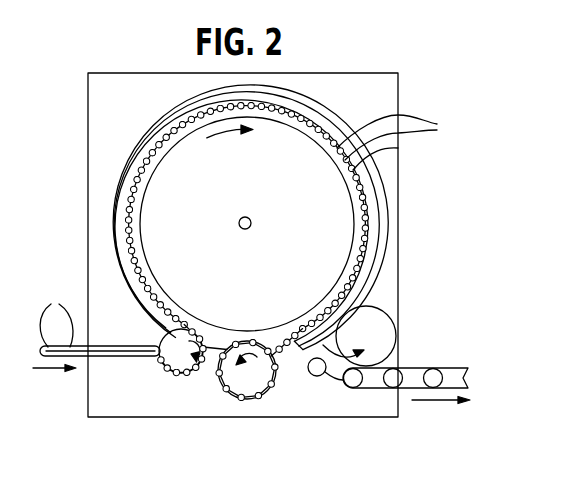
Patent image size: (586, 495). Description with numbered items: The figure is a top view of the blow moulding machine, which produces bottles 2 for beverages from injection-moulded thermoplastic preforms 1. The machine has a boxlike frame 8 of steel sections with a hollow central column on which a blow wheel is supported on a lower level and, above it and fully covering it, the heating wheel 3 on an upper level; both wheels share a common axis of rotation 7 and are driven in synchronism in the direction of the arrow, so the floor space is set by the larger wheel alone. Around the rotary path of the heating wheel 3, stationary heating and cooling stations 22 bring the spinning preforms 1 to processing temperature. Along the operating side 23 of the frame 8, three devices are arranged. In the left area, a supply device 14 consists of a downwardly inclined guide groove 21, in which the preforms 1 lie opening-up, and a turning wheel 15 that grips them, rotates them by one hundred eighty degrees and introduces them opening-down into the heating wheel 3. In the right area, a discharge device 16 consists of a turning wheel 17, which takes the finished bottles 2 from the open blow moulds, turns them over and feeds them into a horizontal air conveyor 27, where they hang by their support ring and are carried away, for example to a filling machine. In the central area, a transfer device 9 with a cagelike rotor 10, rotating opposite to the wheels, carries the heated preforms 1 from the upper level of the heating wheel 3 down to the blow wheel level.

The preforms 1 is at (244, 230).
The bottles 2 is at (434, 372).
The heating wheel 3 is at (366, 219).
The axis of rotation 7 is at (239, 223).
The frame 8 is at (400, 157).
The transfer device 9 is at (248, 404).
The rotor 10 is at (237, 397).
The supply device 14 is at (157, 387).
The turning wheel 15 is at (177, 373).
The discharge device 16 is at (334, 388).
The turning wheel 17 is at (368, 333).
The guide groove 21 is at (120, 357).
The heating and cooling stations 22 is at (145, 137).
The operating side 23 is at (290, 418).
The air conveyor 27 is at (470, 378).